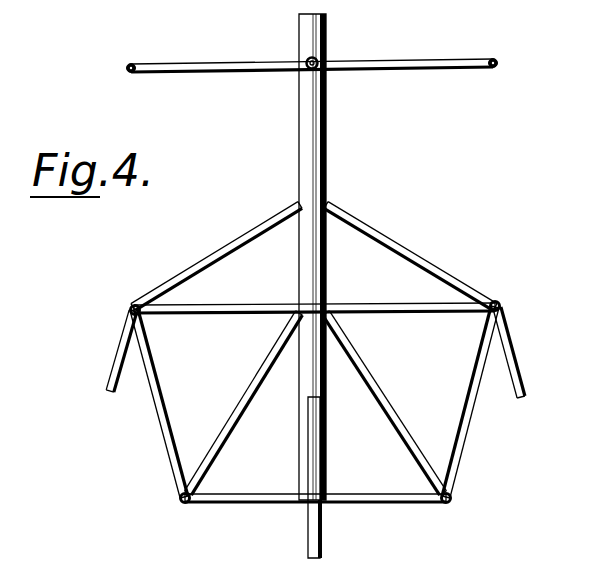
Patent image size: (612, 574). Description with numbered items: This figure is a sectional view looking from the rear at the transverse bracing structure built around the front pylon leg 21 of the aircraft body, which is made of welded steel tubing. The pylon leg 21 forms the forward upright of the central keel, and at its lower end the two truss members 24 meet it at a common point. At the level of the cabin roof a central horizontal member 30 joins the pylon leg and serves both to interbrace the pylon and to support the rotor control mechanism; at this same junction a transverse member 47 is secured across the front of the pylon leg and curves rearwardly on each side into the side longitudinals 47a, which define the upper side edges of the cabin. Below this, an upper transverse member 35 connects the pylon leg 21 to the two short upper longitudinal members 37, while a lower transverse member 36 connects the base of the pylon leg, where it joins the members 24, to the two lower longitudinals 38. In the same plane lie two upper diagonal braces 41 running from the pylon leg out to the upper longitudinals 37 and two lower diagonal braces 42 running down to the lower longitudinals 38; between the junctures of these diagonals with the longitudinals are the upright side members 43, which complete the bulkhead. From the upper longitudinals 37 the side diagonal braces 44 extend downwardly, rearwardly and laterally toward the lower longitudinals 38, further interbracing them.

The front pylon leg 21 is at (326, 123).
The truss member 24 is at (309, 437).
The central horizontal member 30 is at (308, 59).
The transverse member 47 is at (262, 73).
The side longitudinal 47a is at (131, 76).
The upper diagonal brace 41 is at (240, 247).
The upper transverse member 35 is at (236, 304).
The upper longitudinal member 37 is at (130, 310).
The side diagonal brace 44 is at (120, 352).
The upright side member 43 is at (158, 421).
The lower diagonal brace 42 is at (247, 403).
The lower transverse member 36 is at (400, 503).
The lower longitudinal 38 is at (182, 501).